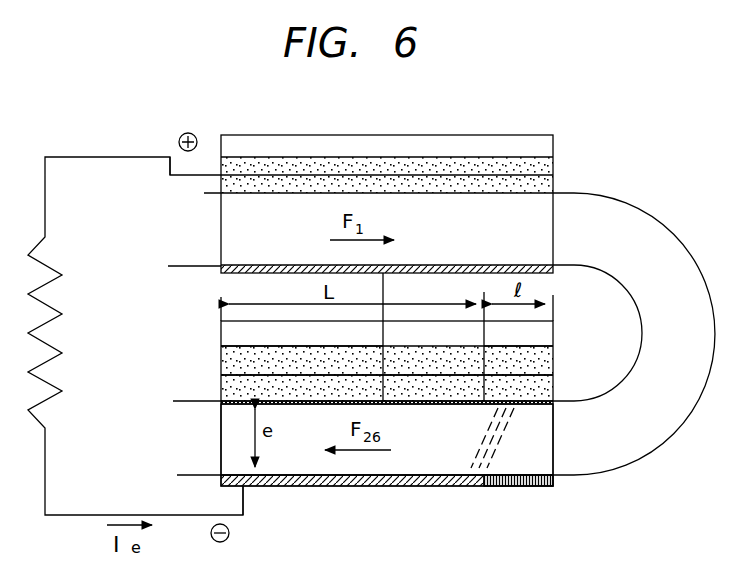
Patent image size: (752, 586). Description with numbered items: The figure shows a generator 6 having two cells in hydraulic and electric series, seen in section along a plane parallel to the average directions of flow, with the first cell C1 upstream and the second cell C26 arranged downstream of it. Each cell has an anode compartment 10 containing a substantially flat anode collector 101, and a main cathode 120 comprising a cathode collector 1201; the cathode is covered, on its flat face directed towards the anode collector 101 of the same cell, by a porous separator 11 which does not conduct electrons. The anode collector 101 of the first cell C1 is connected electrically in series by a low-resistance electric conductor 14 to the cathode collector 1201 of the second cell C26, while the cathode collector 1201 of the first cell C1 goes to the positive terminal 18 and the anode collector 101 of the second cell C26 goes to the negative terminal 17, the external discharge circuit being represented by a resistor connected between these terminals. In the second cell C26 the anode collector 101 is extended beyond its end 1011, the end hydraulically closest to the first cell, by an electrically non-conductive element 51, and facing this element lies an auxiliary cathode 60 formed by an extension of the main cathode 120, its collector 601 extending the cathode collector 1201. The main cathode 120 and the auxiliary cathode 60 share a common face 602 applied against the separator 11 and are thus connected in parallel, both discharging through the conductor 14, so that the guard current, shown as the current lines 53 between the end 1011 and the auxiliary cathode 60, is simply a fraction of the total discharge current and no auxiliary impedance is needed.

The generator 6 is at (586, 160).
The first cell C1 is at (501, 123).
The second cell C26 is at (558, 347).
The positive terminal 18 is at (171, 157).
The negative terminal 17 is at (243, 520).
The electric conductor 14 is at (385, 291).
The main cathode 120 is at (267, 346).
The cathode collector 1201 is at (320, 372).
The common face 602 is at (399, 402).
The auxiliary cathode 60 is at (497, 346).
The collector of the auxiliary cathode 601 is at (556, 373).
The porous separator 11 is at (419, 404).
The anode compartment 10 is at (314, 439).
The anode collector 101 is at (340, 489).
The end of the collector 1011 is at (486, 488).
The electrically non-conductive element 51 is at (509, 488).
The current lines 53 is at (498, 449).